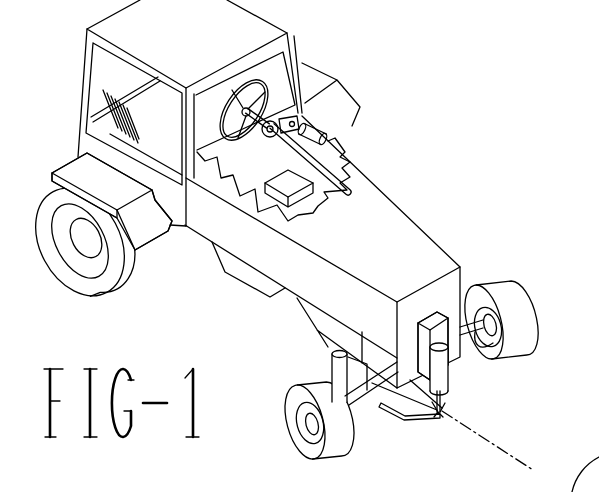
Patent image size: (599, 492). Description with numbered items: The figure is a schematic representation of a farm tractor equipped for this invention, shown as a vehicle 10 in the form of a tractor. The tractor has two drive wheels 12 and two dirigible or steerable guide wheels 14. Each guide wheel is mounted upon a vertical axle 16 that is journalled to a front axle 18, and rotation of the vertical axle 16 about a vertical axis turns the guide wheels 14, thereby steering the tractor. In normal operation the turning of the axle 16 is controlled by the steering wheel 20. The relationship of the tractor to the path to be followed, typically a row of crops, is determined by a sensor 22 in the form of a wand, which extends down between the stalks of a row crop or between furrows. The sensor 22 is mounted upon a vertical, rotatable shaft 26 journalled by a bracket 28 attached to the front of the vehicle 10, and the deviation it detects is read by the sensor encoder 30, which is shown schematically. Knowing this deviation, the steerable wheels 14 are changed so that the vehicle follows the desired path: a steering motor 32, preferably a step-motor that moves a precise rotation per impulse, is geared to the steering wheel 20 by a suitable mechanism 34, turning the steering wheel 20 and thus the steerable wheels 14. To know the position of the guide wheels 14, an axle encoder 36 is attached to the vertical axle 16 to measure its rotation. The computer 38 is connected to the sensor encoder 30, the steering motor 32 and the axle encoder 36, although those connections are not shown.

The vehicle 10 is at (372, 237).
The drive wheels 12 is at (127, 280).
The guide wheels 14 is at (537, 332).
The vertical axle 16 is at (480, 352).
The front axle 18 is at (366, 404).
The steering wheel 20 is at (231, 78).
The sensor wand 22 is at (410, 422).
The sensor shaft 26 is at (443, 411).
The bracket 28 is at (429, 318).
The sensor encoder 30 is at (448, 368).
The steering motor 32 is at (314, 118).
The suitable mechanism 34 is at (271, 137).
The axle encoder 36 is at (330, 367).
The computer 38 is at (277, 200).